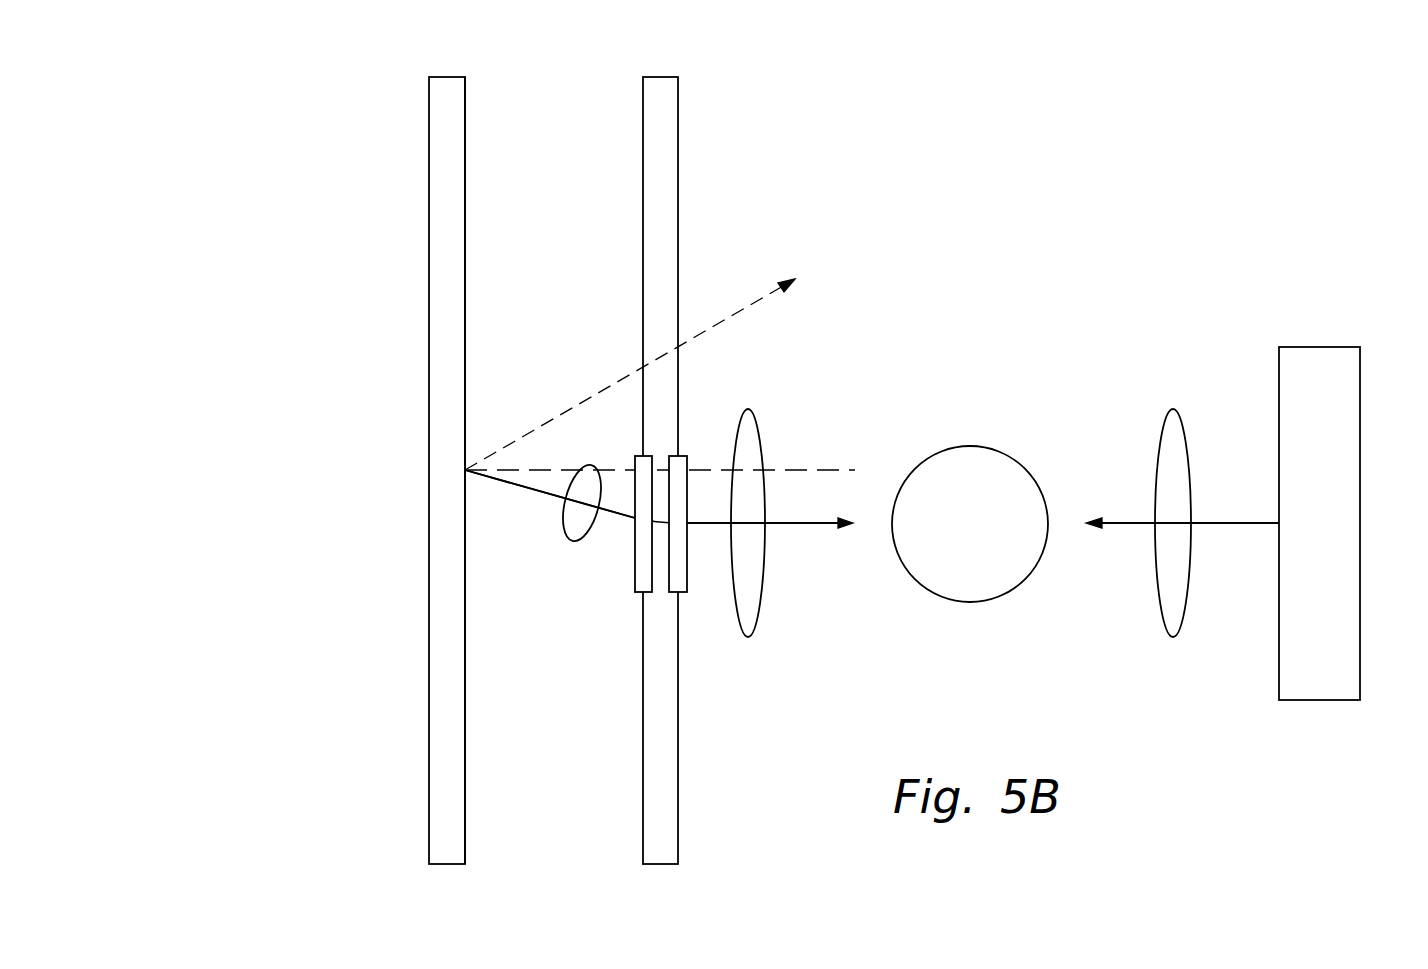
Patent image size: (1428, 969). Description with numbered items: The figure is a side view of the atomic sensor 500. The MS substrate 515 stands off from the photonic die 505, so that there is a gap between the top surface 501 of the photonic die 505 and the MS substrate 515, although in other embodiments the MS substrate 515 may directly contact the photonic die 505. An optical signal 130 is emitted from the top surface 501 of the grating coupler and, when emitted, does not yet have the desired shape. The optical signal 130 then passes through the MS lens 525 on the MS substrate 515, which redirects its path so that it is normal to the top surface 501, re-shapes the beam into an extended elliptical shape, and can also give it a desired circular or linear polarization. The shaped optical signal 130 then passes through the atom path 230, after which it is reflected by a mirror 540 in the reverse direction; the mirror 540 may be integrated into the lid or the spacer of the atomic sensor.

The atomic sensor 500 is at (1088, 62).
The top surface 501 is at (465, 97).
The photonic die 505 is at (429, 154).
The MS substrate 515 is at (678, 153).
The MS lens 525 is at (683, 456).
The mirror 540 is at (1279, 370).
The atom path 230 is at (968, 446).
The optical signal 130 is at (530, 488).